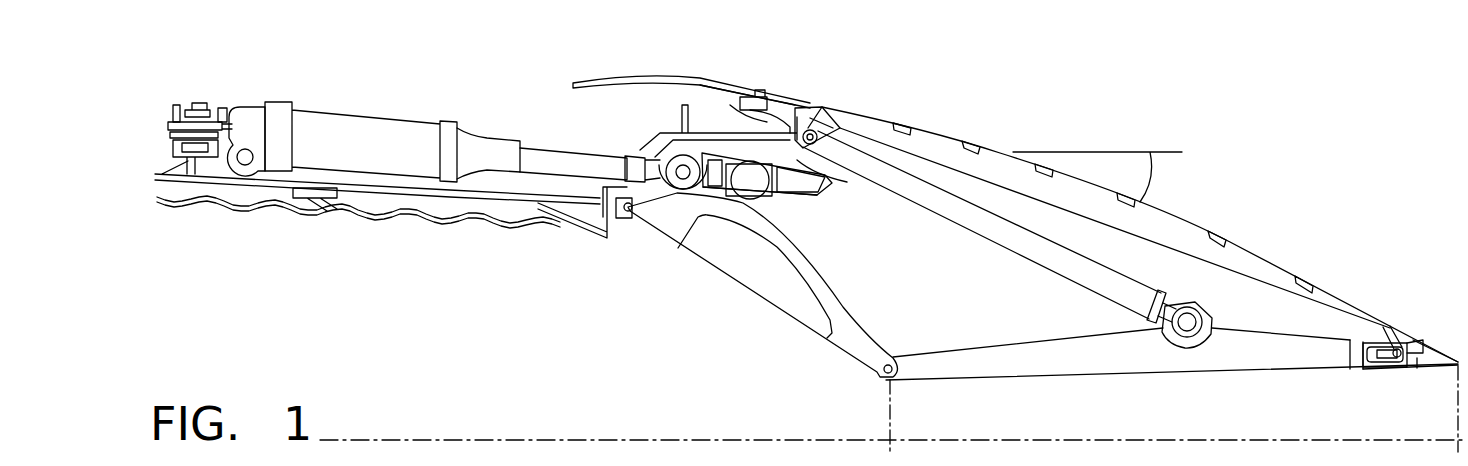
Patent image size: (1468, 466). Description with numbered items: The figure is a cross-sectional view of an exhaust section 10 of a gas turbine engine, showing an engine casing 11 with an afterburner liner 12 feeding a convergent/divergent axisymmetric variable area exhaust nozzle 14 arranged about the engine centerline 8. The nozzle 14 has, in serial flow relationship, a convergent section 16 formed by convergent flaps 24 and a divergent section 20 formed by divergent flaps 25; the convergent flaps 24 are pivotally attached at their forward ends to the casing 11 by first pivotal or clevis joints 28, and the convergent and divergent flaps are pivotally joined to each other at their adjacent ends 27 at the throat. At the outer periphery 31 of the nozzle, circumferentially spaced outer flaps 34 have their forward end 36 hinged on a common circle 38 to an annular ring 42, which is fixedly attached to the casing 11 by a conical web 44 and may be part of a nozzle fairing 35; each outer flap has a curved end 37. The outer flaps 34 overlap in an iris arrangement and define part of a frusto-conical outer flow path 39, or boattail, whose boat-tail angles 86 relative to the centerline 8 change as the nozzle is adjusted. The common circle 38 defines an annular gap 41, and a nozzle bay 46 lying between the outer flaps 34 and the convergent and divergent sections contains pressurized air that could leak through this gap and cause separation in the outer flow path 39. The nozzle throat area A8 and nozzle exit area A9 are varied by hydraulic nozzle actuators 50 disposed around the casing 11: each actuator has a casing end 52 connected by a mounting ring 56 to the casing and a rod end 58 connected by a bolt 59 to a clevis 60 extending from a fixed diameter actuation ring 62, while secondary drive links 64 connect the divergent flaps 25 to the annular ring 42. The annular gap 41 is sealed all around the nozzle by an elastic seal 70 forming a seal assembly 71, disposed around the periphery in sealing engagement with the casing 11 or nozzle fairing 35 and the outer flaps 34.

The engine centerline 8 is at (653, 440).
The exhaust section 10 is at (423, 333).
The engine casing 11 is at (440, 199).
The afterburner liner 12 is at (493, 226).
The variable area exhaust nozzle 14 is at (990, 134).
The convergent section 16 is at (686, 334).
The divergent section 20 is at (1143, 406).
The convergent flaps 24 is at (693, 262).
The divergent flaps 25 is at (1268, 372).
The adjacent ends 27 is at (893, 356).
The first pivotal or clevis joints 28 is at (625, 215).
The outer periphery 31 is at (797, 160).
The outer flaps 34 is at (1210, 236).
The nozzle fairing 35 is at (594, 84).
The forward end 36 is at (862, 115).
The curved end 37 is at (822, 105).
The common circle 38 is at (808, 110).
The outer flow path 39 is at (905, 128).
The annular gap 41 is at (783, 133).
The annular ring 42 is at (752, 118).
The conical web 44 is at (672, 140).
The nozzle bay 46 is at (933, 274).
The hydraulic nozzle actuators 50 is at (372, 108).
The casing end 52 is at (212, 130).
The mounting ring 56 is at (193, 157).
The rod end 58 is at (657, 166).
The bolt 59 is at (685, 176).
The clevis 60 is at (705, 153).
The fixed diameter actuation ring 62 is at (800, 192).
The secondary drive links 64 is at (1043, 270).
The elastic seal 70 is at (733, 84).
The seal assembly 71 is at (940, 95).
The boat-tail angles 86 is at (1160, 178).
The nozzle throat area A8 is at (895, 422).
The nozzle exit area A9 is at (1453, 414).